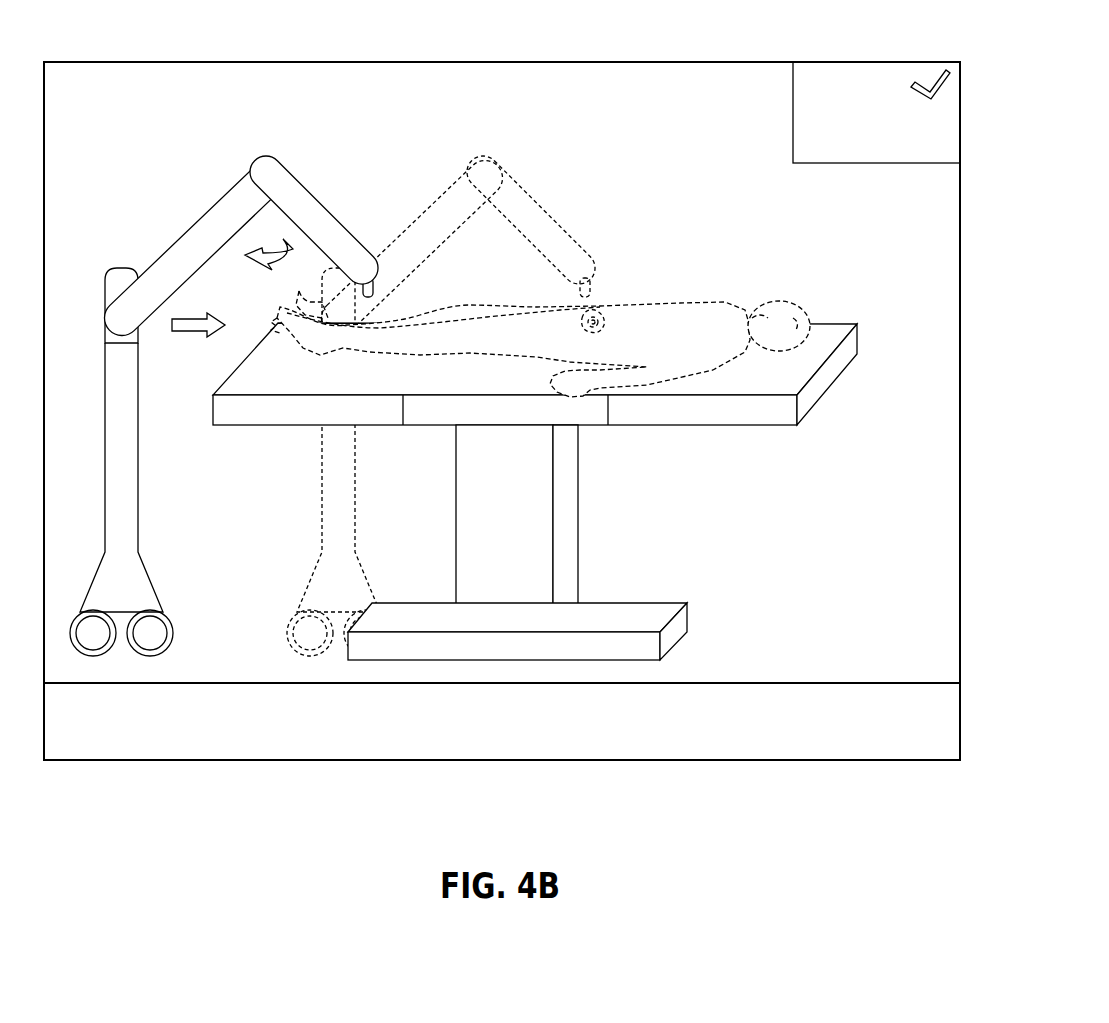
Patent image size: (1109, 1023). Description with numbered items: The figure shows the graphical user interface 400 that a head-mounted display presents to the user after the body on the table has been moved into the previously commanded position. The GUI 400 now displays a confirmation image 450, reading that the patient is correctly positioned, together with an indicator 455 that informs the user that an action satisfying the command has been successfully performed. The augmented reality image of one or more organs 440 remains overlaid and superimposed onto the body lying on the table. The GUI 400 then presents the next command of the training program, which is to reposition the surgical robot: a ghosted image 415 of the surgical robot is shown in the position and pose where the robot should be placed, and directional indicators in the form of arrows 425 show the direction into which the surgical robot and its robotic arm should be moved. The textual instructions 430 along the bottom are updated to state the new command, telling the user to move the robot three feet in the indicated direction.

The graphical user interface 400 is at (656, 62).
The ghosted image 415 is at (533, 207).
The arrows 425 is at (208, 317).
The textual instructions 430 is at (796, 680).
The augmented reality image of one or more organs 440 is at (598, 315).
The confirmation image 450 is at (847, 163).
The indicator 455 is at (930, 83).